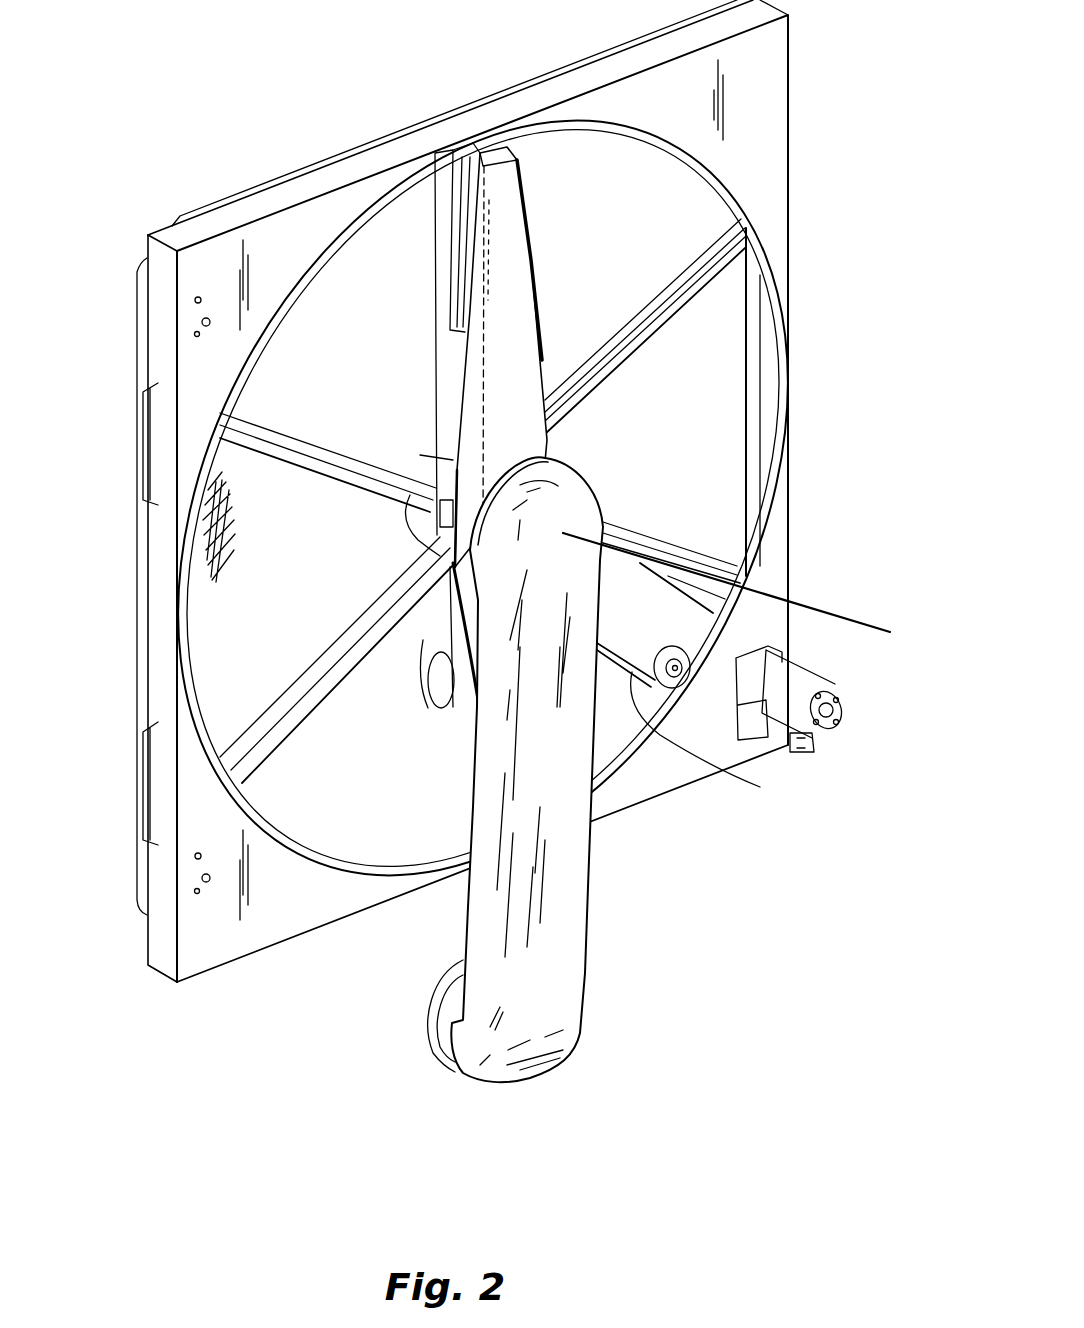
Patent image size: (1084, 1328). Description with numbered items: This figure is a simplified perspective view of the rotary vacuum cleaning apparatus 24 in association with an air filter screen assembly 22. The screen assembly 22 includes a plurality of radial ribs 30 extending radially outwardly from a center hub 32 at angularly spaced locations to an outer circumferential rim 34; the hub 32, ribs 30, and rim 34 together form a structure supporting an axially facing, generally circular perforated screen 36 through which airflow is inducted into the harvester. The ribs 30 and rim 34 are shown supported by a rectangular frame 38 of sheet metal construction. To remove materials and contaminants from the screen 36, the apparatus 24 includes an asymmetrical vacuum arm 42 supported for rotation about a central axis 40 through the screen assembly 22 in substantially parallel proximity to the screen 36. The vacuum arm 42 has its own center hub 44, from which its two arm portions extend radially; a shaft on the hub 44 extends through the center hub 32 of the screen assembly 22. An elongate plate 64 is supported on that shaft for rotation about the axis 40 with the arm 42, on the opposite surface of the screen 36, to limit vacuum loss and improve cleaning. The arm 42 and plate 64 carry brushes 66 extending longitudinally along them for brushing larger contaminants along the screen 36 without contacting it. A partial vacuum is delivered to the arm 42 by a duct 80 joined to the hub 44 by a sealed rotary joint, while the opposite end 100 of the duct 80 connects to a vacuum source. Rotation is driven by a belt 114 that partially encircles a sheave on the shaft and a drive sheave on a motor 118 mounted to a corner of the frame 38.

The air filter screen assembly 22 is at (672, 182).
The rotary vacuum cleaning apparatus 24 is at (533, 197).
The radial ribs 30 is at (700, 283).
The center hub 32 is at (410, 508).
The outer circumferential rim 34 is at (330, 240).
The perforated screen 36 is at (198, 558).
The rectangular frame 38 is at (672, 792).
The central axis 40 is at (818, 606).
The vacuum arm 42 is at (530, 166).
The center hub 44 is at (425, 592).
The elongate plate 64 is at (432, 242).
The brushes 66 is at (437, 287).
The duct 80 is at (587, 980).
The opposite end of duct 100 is at (458, 1076).
The belt 114 is at (760, 787).
The motor 118 is at (845, 705).